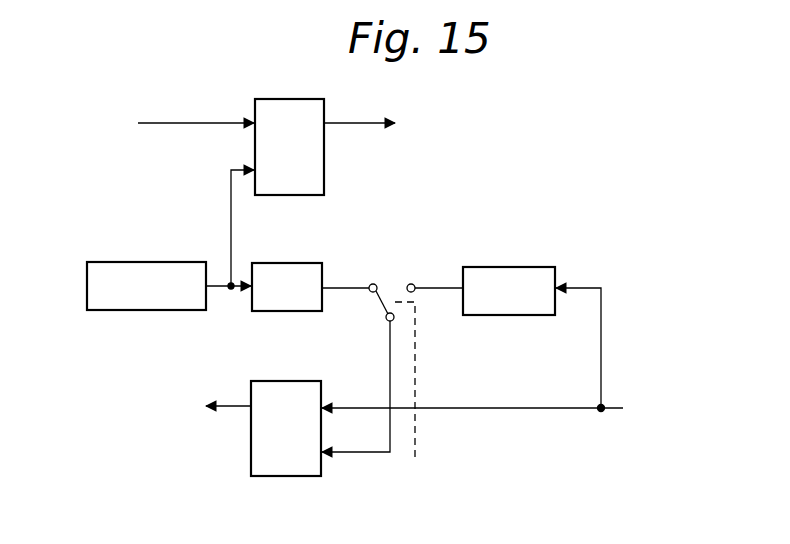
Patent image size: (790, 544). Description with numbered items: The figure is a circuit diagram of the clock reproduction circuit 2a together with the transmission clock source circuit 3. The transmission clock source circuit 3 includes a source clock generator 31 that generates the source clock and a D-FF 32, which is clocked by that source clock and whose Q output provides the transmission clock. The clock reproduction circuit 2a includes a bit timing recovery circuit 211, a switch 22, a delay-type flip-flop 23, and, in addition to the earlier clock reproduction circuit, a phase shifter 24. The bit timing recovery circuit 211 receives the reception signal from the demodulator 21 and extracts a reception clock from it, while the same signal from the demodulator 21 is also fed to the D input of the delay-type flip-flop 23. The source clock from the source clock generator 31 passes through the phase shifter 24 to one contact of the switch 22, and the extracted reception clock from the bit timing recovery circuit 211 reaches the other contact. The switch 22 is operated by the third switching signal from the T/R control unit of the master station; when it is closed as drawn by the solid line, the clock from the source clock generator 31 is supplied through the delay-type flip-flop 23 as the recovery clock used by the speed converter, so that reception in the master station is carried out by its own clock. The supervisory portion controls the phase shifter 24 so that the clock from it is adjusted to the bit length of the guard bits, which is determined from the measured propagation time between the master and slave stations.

The transmission clock source circuit 3 is at (172, 77).
The D-FF 32 is at (324, 172).
The source clock generator 31 is at (143, 262).
The phase shifter 24 is at (282, 263).
The switch 22 is at (388, 283).
The bit timing recovery circuit 211 is at (535, 267).
The delay-type flip-flop 23 is at (287, 381).
The demodulator 21 is at (526, 411).
The clock reproduction circuit 2a is at (514, 470).